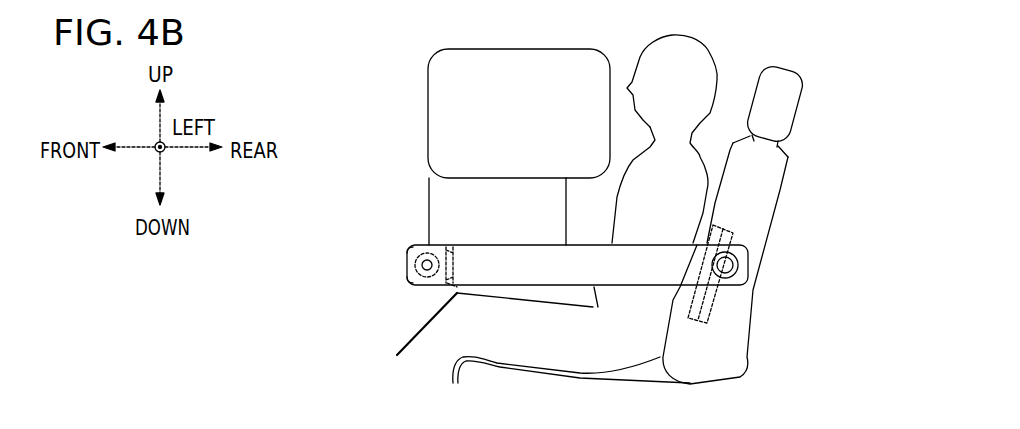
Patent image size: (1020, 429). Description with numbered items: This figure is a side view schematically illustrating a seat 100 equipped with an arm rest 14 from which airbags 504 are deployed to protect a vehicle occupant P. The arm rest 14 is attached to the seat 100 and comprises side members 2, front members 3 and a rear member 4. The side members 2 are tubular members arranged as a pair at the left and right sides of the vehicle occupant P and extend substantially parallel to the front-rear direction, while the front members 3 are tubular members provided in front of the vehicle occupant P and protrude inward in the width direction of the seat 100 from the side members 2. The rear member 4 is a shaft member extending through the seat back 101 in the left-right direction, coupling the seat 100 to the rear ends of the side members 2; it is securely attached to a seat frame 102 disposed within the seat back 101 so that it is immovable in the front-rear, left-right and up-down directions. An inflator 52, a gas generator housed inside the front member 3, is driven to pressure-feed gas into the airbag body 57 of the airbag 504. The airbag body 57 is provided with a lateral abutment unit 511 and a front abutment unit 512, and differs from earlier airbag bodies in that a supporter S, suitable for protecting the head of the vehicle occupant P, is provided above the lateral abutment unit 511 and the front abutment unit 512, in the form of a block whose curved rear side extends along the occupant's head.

The supporter S is at (428, 55).
The vehicle occupant P is at (679, 33).
The side member 2 is at (590, 258).
The arm rest 14 is at (576, 260).
The lateral abutment unit 511 is at (518, 267).
The front abutment unit 512 is at (452, 283).
The airbag 504 is at (393, 189).
The inflator 52 is at (418, 243).
The airbag body 57 is at (423, 243).
The front member 3 is at (405, 276).
The rear member 4 is at (740, 259).
The seat 100 is at (806, 120).
The seat back 101 is at (780, 180).
The seat frame 102 is at (710, 305).